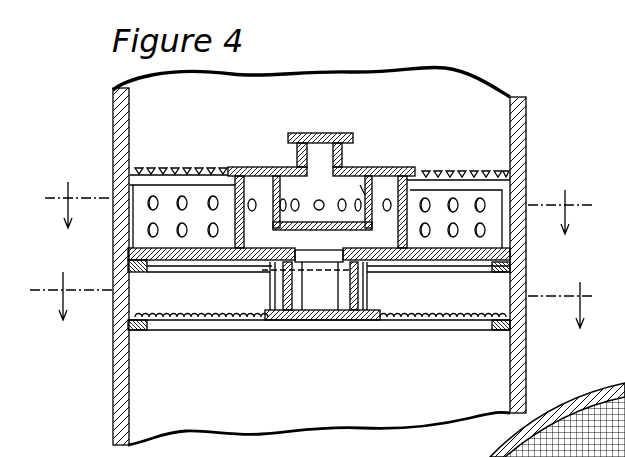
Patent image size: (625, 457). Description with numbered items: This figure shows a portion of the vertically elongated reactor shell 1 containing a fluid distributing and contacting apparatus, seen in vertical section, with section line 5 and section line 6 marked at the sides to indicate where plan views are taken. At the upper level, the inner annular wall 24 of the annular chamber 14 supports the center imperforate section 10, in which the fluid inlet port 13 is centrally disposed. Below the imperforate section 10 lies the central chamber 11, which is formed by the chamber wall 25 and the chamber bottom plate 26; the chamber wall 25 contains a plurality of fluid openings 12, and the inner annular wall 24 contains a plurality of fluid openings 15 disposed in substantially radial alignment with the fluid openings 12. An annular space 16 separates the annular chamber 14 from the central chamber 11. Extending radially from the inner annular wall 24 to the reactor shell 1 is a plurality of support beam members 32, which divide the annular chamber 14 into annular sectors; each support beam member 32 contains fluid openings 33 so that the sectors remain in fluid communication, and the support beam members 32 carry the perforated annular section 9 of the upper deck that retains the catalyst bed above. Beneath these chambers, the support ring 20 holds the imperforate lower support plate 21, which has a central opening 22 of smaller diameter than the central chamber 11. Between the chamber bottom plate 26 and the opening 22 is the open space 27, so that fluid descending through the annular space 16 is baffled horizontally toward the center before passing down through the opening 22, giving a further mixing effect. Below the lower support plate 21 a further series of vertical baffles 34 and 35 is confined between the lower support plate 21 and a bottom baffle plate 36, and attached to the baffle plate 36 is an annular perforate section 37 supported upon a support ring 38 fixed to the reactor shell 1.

The shell 1 is at (527, 150).
The perforated annular section 9 is at (466, 170).
The center imperforate section 10 is at (263, 166).
The central chamber 11 is at (313, 215).
The fluid openings 12 is at (297, 200).
The fluid inlet port 13 is at (297, 133).
The annular chamber 14 is at (133, 215).
The fluid openings 15 is at (392, 202).
The annular space 16 is at (378, 190).
The support ring 20 is at (172, 268).
The lower support plate 21 is at (212, 262).
The central opening 22 is at (320, 257).
The inner annular wall 24 is at (233, 207).
The chamber wall 25 is at (360, 185).
The chamber bottom plate 26 is at (300, 232).
The open space 27 is at (332, 245).
The support beam members 32 is at (172, 193).
The fluid openings 33 is at (135, 241).
The vertical baffle 34 is at (358, 287).
The vertical baffle 35 is at (268, 294).
The bottom baffle plate 36 is at (300, 321).
The annular perforate section 37 is at (487, 321).
The support ring 38 is at (132, 331).
The section line 5— 5 is at (318, 209).
The section line 6- 6 is at (316, 300).